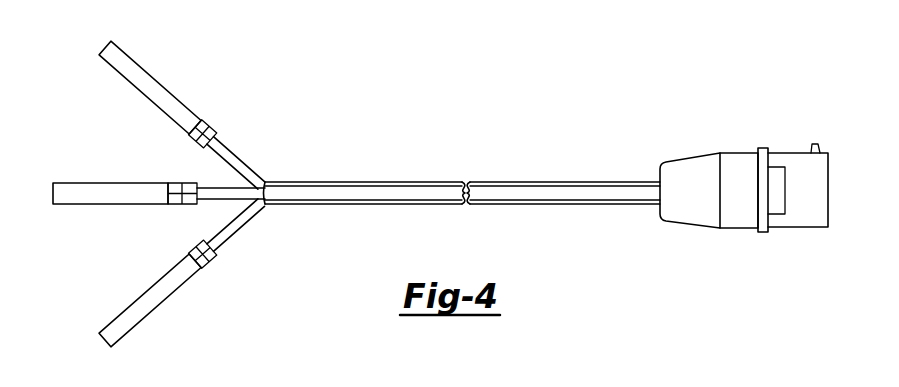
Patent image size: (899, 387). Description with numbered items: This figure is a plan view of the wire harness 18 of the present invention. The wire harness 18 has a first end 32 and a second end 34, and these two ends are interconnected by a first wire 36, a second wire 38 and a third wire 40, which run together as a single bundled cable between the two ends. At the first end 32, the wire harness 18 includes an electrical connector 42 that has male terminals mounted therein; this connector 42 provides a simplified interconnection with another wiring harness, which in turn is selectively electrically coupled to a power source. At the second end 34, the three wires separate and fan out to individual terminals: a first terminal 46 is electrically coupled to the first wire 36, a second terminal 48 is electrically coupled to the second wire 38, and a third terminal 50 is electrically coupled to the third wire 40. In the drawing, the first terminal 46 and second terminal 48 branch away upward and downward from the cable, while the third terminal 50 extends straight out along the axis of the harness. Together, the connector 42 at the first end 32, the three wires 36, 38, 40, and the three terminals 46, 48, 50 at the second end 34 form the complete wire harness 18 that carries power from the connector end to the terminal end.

The wire harness 18 is at (634, 76).
The first end 32 is at (800, 130).
The second end 34 is at (88, 96).
The first wire 36 is at (237, 163).
The second wire 38 is at (238, 220).
The third wire 40 is at (208, 193).
The electrical connector 42 is at (803, 217).
The first terminal 46 is at (130, 60).
The second terminal 48 is at (138, 318).
The third terminal 50 is at (70, 187).